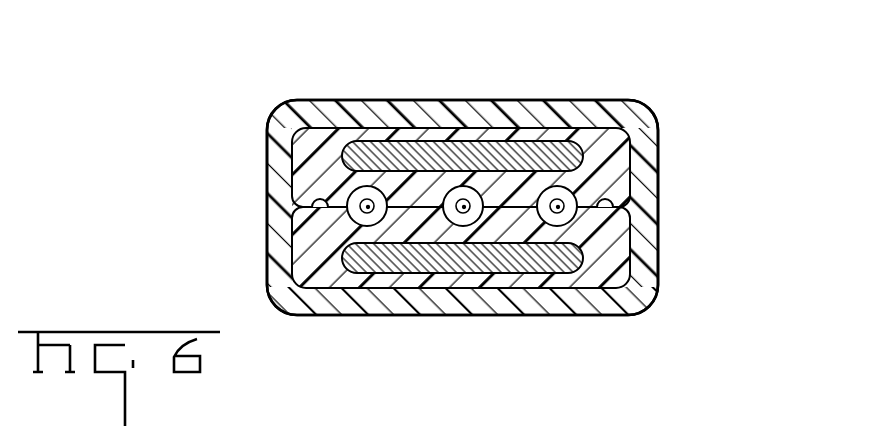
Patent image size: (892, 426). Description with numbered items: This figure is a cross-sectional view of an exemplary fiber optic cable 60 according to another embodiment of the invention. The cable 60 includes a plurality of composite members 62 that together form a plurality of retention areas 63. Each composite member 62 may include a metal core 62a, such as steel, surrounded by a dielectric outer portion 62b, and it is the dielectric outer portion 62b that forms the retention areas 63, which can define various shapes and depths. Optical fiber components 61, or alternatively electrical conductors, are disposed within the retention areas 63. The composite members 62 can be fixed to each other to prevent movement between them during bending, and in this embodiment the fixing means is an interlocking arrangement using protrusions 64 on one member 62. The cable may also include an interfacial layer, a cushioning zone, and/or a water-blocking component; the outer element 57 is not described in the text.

The outer jacket 57 is at (636, 301).
The fiber optic cable 60 is at (271, 101).
The optical fiber components 61 is at (557, 208).
The composite member 62 is at (300, 158).
The metal core 62a is at (565, 152).
The dielectric outer portion 62b is at (618, 162).
The retention areas 63 is at (556, 196).
The protrusions 64 is at (318, 210).